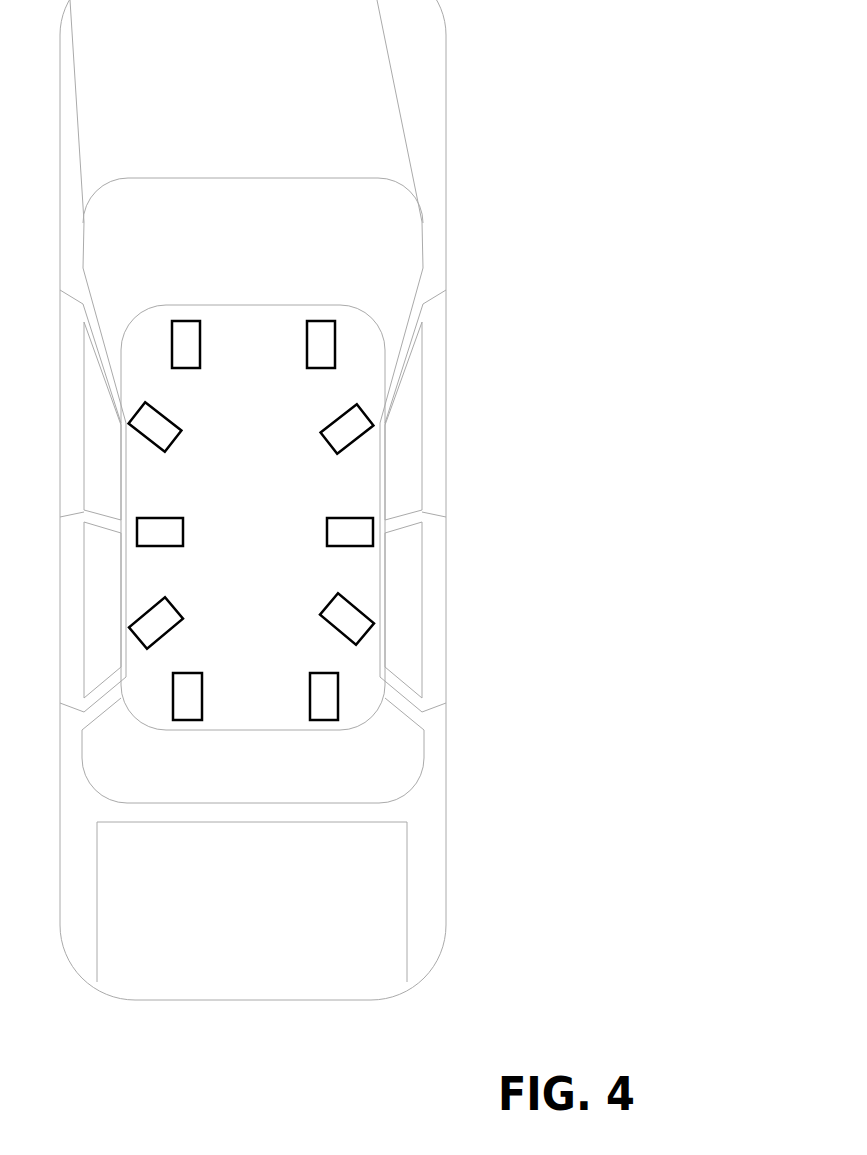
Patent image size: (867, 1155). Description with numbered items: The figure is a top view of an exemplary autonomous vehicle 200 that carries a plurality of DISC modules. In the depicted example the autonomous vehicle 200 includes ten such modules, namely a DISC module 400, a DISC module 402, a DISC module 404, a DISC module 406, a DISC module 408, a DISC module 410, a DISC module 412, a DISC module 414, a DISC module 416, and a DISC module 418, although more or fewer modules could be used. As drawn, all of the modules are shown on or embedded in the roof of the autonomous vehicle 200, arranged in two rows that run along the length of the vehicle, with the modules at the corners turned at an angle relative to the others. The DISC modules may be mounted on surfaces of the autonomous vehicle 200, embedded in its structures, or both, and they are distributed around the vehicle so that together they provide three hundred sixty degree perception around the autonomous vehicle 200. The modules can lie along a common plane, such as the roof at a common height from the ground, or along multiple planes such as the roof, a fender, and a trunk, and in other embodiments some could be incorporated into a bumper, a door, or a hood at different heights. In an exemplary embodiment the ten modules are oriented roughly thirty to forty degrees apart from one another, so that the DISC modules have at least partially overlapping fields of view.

The autonomous vehicle 200 is at (447, 50).
The DISC module 400 is at (200, 335).
The DISC module 402 is at (163, 413).
The DISC module 404 is at (160, 518).
The DISC module 406 is at (182, 613).
The DISC module 408 is at (188, 673).
The DISC module 410 is at (310, 708).
The DISC module 412 is at (338, 597).
The DISC module 414 is at (350, 518).
The DISC module 416 is at (343, 416).
The DISC module 418 is at (307, 350).